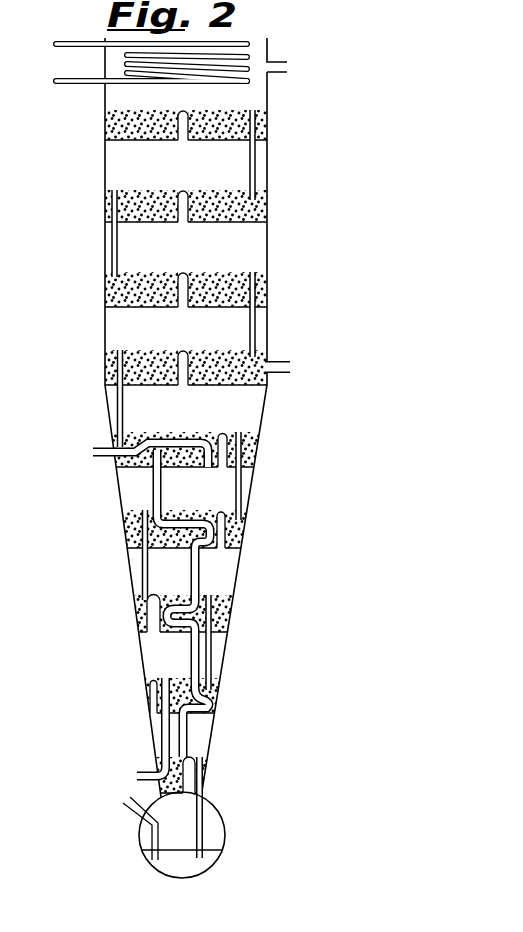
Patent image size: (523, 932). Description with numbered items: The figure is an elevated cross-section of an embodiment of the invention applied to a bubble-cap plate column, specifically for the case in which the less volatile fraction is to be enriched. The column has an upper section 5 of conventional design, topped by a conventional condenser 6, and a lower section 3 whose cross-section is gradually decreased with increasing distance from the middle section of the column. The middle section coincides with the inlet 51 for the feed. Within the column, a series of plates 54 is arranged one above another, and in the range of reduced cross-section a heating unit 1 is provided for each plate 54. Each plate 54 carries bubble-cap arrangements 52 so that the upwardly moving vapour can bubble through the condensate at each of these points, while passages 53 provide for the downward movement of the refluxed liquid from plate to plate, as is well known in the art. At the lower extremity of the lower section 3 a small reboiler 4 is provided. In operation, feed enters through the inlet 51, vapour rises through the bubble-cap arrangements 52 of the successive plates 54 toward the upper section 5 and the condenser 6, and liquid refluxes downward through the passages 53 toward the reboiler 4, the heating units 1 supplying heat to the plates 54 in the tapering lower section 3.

The heating unit 1 is at (173, 603).
The lower section 3 is at (142, 660).
The reboiler 4 is at (139, 831).
The upper section 5 is at (105, 257).
The inlet 51 is at (325, 367).
The bubble-cap arrangement 52 is at (187, 270).
The passage 53 is at (266, 108).
The plate 54 is at (105, 367).
The condenser 6 is at (123, 63).